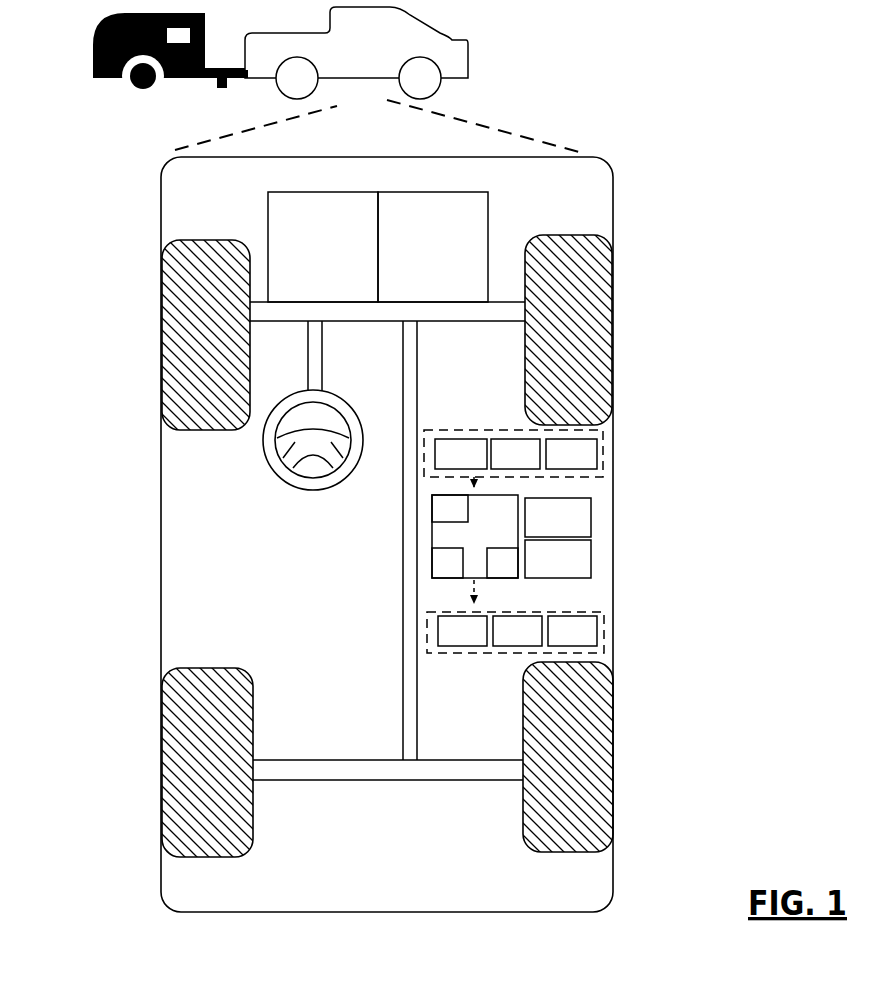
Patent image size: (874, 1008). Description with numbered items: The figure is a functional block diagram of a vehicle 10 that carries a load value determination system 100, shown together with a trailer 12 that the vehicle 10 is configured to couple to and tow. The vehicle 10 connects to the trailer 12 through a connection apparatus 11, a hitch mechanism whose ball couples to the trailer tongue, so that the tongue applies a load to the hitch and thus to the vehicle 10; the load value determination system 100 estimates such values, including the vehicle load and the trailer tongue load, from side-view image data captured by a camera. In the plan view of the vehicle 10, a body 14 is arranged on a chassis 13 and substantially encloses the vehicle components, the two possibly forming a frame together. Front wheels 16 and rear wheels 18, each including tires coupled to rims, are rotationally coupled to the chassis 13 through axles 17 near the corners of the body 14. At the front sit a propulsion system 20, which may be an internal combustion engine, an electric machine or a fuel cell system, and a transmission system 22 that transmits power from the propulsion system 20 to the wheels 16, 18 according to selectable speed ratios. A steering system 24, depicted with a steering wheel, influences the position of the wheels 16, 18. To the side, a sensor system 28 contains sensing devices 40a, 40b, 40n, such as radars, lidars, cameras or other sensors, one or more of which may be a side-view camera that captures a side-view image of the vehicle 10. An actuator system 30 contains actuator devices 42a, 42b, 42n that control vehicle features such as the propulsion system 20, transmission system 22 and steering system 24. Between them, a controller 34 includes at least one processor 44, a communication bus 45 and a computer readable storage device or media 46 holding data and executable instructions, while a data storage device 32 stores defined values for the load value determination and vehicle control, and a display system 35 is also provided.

The vehicle 10 is at (468, 60).
The connection apparatus 11 is at (244, 75).
The trailer 12 is at (93, 65).
The chassis 13 is at (403, 697).
The body 14 is at (160, 700).
The front wheels 16 is at (210, 430).
The axles 17 is at (462, 320).
The rear wheels 18 is at (222, 857).
The propulsion system 20 is at (323, 247).
The transmission system 22 is at (433, 247).
The steering system 24 is at (346, 346).
The sensor system 28 is at (513, 431).
The actuator system 30 is at (515, 654).
The data storage device 32 is at (558, 559).
The controller 34 is at (475, 536).
The display system 35 is at (558, 517).
The sensing device 40a is at (461, 454).
The sensing device 40b is at (515, 454).
The sensing device 40n is at (571, 454).
The actuator device 42a is at (462, 631).
The actuator device 42b is at (517, 631).
The actuator device 42n is at (572, 631).
The processor 44 is at (447, 563).
The communication bus 45 is at (450, 508).
The computer readable storage device or media 46 is at (502, 563).
The load value determination system 100 is at (768, 112).